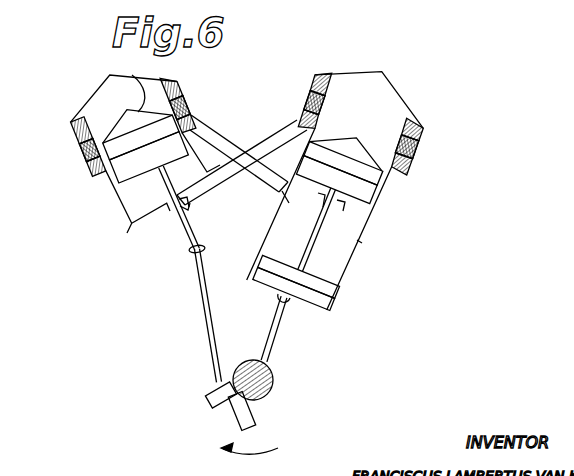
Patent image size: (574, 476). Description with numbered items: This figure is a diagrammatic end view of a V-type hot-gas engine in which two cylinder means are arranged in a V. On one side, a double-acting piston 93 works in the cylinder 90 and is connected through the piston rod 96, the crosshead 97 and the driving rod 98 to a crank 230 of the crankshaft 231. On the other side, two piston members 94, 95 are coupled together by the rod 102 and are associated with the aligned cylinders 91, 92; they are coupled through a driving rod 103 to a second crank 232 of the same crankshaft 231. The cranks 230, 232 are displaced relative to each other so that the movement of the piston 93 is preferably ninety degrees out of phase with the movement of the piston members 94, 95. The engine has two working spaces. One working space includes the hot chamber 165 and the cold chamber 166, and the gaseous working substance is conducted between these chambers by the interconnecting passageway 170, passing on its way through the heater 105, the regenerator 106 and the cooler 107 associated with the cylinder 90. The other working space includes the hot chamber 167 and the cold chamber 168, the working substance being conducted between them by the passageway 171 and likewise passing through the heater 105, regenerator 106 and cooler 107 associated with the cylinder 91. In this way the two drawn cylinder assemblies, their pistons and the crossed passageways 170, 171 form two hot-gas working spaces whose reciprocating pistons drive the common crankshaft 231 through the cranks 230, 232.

The cylinder 90 is at (118, 198).
The double-acting piston 93 is at (132, 75).
The hot chamber 165 is at (95, 92).
The heater 105 is at (184, 79).
The regenerator 106 is at (192, 106).
The cooler 107 is at (189, 131).
The cold chamber 168 is at (142, 177).
The driving rod 98 is at (203, 297).
The piston rod 96 is at (194, 233).
The crosshead 97 is at (204, 252).
The interconnecting passageway 170 is at (270, 189).
The passageway 171 is at (279, 137).
The hot chamber 167 is at (390, 95).
The cylinder 91 is at (378, 201).
The piston member 94 is at (379, 177).
The rod 102 is at (321, 226).
The cylinder 92 is at (362, 243).
The cold chamber 166 is at (343, 262).
The piston member 95 is at (329, 305).
The driving rod 103 is at (281, 329).
The crankshaft 231 is at (273, 380).
The crank 230 is at (208, 400).
The crank 232 is at (256, 408).